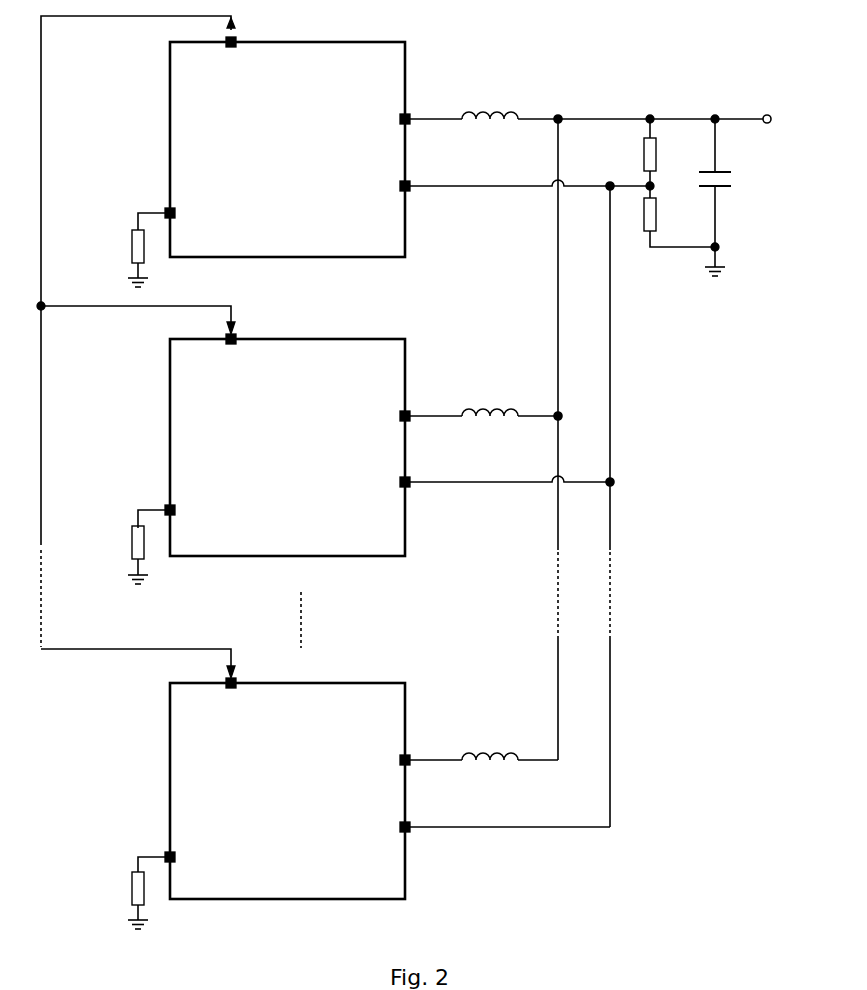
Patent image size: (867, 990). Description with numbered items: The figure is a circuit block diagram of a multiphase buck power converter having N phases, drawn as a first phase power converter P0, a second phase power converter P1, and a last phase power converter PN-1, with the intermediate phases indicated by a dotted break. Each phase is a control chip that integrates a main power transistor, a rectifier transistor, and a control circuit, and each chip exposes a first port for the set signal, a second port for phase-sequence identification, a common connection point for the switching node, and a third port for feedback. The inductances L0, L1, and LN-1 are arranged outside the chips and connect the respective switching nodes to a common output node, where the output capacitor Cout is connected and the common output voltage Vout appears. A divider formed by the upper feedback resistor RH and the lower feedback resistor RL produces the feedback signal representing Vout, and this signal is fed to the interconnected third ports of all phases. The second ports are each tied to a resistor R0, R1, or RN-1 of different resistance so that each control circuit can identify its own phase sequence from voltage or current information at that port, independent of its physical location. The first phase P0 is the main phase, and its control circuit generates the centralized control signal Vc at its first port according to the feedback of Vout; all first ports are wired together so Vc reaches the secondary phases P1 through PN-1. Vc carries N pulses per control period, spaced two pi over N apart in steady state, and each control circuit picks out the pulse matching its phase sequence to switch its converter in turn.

The centralized control signal Vc is at (136, 347).
The first phase power converter P0 is at (287, 147).
The second phase power converter P1 is at (287, 445).
The last phase power converter PN-1 is at (287, 788).
The phase sequence resistor of first phase R0 is at (135, 250).
The phase sequence resistor of second phase R1 is at (135, 547).
The phase sequence resistor of last phase RN-1 is at (126, 893).
The inductance of first phase L0 is at (481, 100).
The inductance of second phase L1 is at (481, 397).
The inductance of last phase LN-1 is at (481, 740).
The upper feedback resistor RH is at (666, 152).
The lower feedback resistor RL is at (679, 216).
The output capacitor Cout is at (739, 195).
The output voltage Vout is at (669, 103).